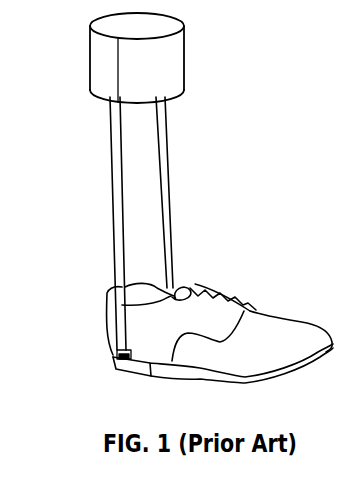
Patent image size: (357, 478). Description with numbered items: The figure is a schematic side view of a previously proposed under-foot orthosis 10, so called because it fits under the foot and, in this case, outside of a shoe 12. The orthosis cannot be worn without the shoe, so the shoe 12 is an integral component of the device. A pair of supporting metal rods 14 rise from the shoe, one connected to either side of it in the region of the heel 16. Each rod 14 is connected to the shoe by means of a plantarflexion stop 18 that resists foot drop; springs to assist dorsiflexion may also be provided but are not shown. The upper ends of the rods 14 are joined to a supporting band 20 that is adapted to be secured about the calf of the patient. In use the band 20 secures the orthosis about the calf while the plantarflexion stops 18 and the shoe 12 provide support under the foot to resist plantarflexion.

The under foot orthosis 10 is at (60, 72).
The shoe 12 is at (84, 312).
The supporting metal rods 14 is at (123, 181).
The heel 16 is at (135, 372).
The plantarflexion stop 18 is at (113, 353).
The supporting band 20 is at (184, 66).